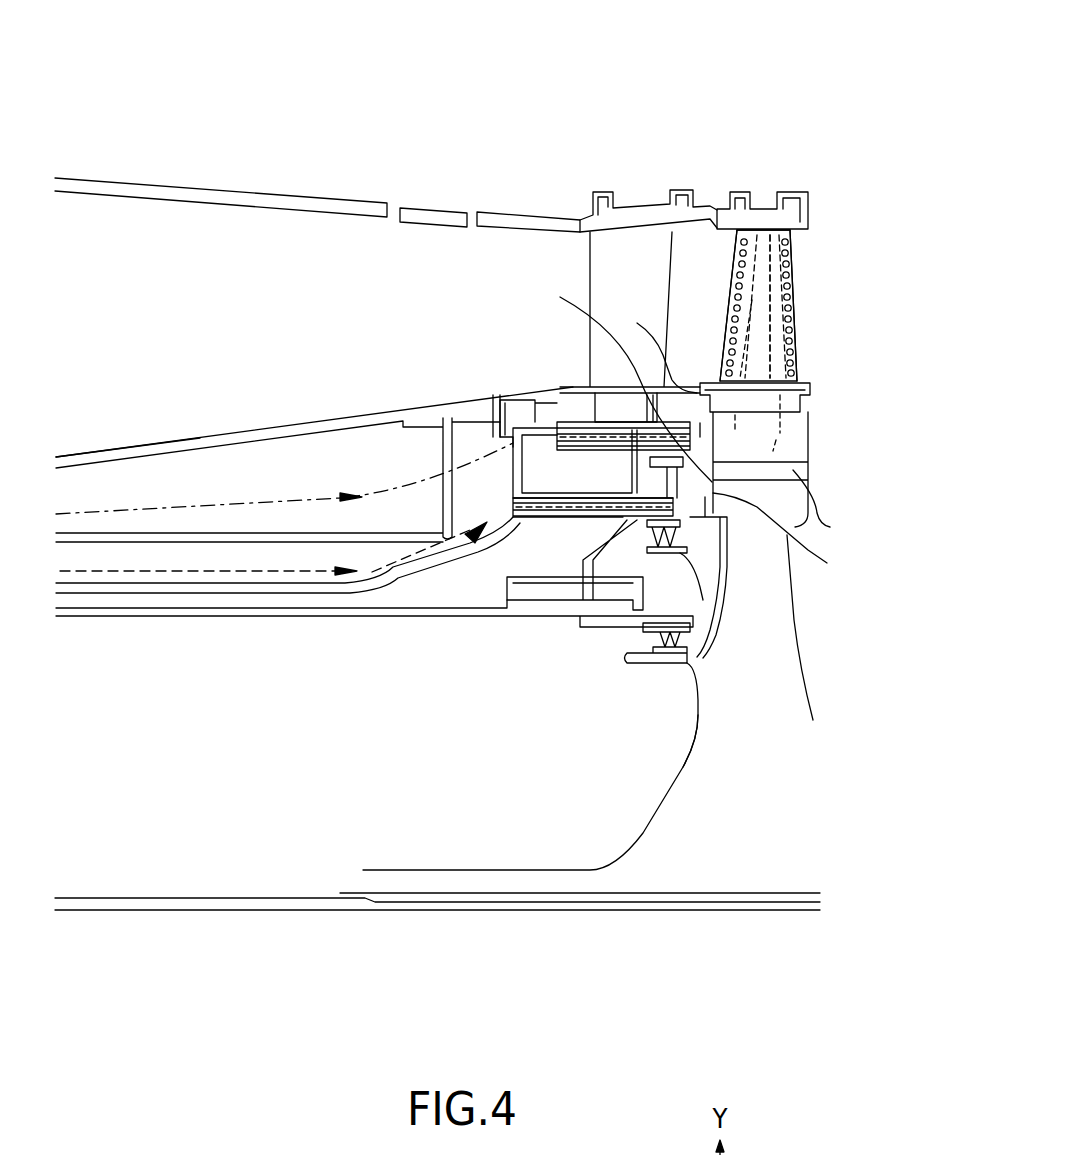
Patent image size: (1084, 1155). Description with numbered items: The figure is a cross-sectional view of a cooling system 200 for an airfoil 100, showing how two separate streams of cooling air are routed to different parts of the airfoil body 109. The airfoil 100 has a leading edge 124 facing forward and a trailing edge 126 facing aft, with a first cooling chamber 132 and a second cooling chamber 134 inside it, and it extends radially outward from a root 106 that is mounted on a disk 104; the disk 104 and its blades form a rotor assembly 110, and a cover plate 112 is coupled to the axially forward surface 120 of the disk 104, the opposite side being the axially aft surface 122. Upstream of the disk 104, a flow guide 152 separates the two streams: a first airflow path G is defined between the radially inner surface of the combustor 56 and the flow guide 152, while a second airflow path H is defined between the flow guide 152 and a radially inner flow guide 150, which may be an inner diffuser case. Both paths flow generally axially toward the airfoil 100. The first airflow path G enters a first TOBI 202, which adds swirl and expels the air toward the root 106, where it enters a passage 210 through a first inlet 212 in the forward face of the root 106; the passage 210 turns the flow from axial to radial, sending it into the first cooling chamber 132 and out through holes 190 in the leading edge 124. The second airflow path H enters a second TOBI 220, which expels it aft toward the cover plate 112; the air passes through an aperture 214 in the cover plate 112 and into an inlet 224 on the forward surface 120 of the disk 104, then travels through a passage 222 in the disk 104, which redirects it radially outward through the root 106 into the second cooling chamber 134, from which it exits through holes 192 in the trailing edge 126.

The cooling system 200 is at (784, 98).
The airfoil 100 is at (803, 233).
The airfoil body 109 is at (806, 305).
The leading edge 124 is at (740, 257).
The trailing edge 126 is at (793, 267).
The second cooling chamber 134 is at (773, 303).
The holes 190 is at (733, 317).
The first cooling chamber 132 is at (727, 347).
The holes 192 is at (880, 235).
The root 106 is at (810, 413).
The passage 210 is at (750, 427).
The passage 222 is at (830, 527).
The aperture 214 is at (827, 563).
The axially aft surface 122 is at (803, 680).
The cover plate 112 is at (727, 517).
The first TOBI 202 is at (597, 450).
The inlet 224 is at (565, 300).
The first inlet 212 is at (659, 363).
The combustor 56 is at (260, 433).
The flow guide 152 is at (280, 537).
The first airflow path G is at (170, 507).
The flow guide 150 is at (337, 587).
The second airflow path H is at (410, 562).
The second TOBI 220 is at (573, 517).
The axially forward surface 120 is at (680, 768).
The disk 104 is at (727, 756).
The rotor assembly 110 is at (847, 930).